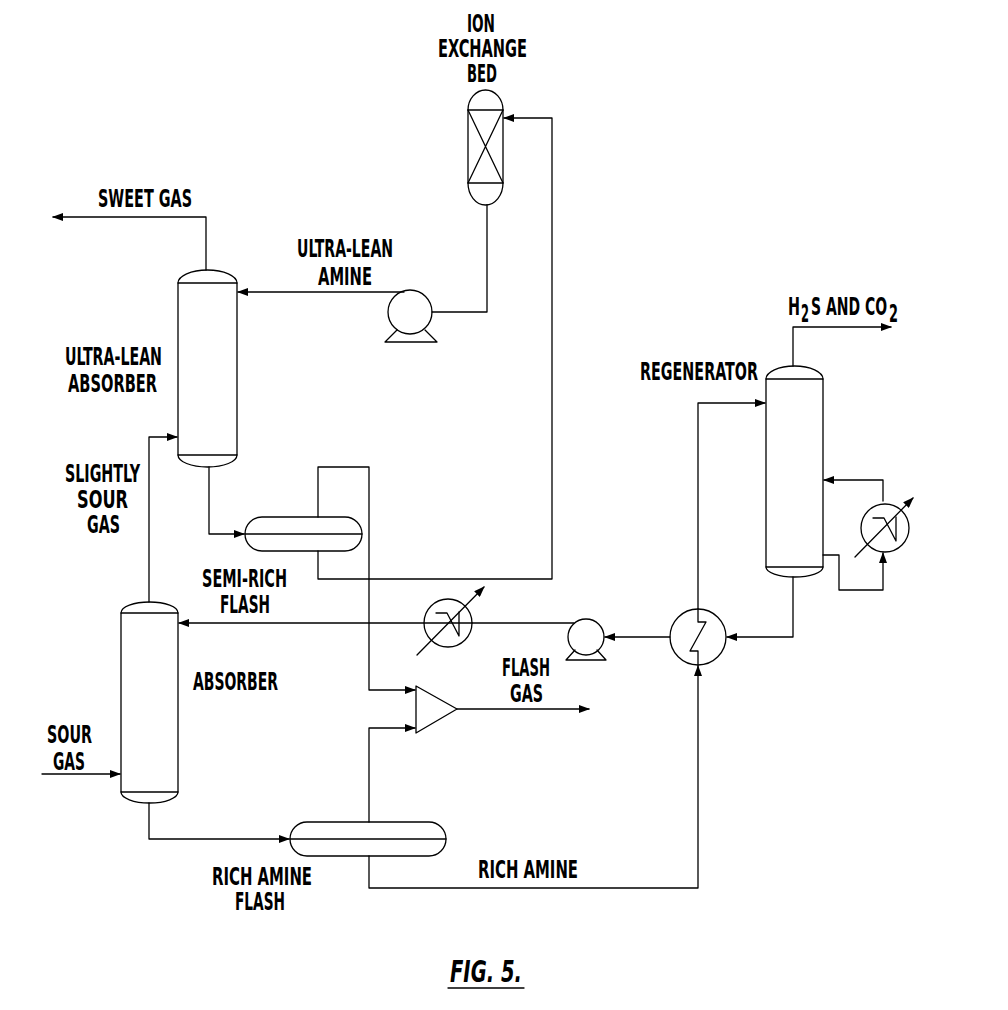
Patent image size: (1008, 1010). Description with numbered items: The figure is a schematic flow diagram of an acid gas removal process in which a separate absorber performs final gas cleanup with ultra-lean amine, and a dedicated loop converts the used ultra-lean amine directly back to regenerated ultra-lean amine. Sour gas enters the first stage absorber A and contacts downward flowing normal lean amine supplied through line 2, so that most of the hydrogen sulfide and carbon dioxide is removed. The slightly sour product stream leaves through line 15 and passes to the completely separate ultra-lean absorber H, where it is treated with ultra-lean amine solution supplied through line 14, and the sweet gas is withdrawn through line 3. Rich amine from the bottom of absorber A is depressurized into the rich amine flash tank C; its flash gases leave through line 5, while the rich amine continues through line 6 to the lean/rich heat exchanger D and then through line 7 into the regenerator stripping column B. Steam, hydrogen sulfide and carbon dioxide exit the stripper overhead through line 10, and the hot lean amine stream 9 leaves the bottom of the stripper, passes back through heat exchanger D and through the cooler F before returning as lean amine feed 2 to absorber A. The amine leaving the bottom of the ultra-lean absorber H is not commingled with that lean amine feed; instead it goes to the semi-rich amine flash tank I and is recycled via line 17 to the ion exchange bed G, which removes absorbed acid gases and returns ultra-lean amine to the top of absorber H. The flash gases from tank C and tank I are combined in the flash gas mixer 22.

The lean amine line 2 is at (318, 623).
The sweet gas line 3 is at (130, 217).
The flash gas line 5 is at (369, 798).
The rich amine line 6 is at (625, 888).
The regenerator feed line 7 is at (698, 472).
The hot lean amine stream 9 is at (795, 603).
The stripper overhead line 10 is at (793, 343).
The ultra-lean amine line 14 is at (318, 293).
The product stream line 15 is at (148, 567).
The semi-rich amine recycle line 17 is at (552, 401).
The flash gas mixer 22 is at (502, 716).
The absorber A is at (121, 687).
The regenerator stripping column B is at (823, 452).
The rich amine flash tank C is at (342, 822).
The lean/rich heat exchanger D is at (716, 658).
The cooler F is at (448, 599).
The ion exchange bed G is at (468, 157).
The ultra-lean absorber H is at (237, 357).
The semi-rich amine flash tank I is at (283, 517).